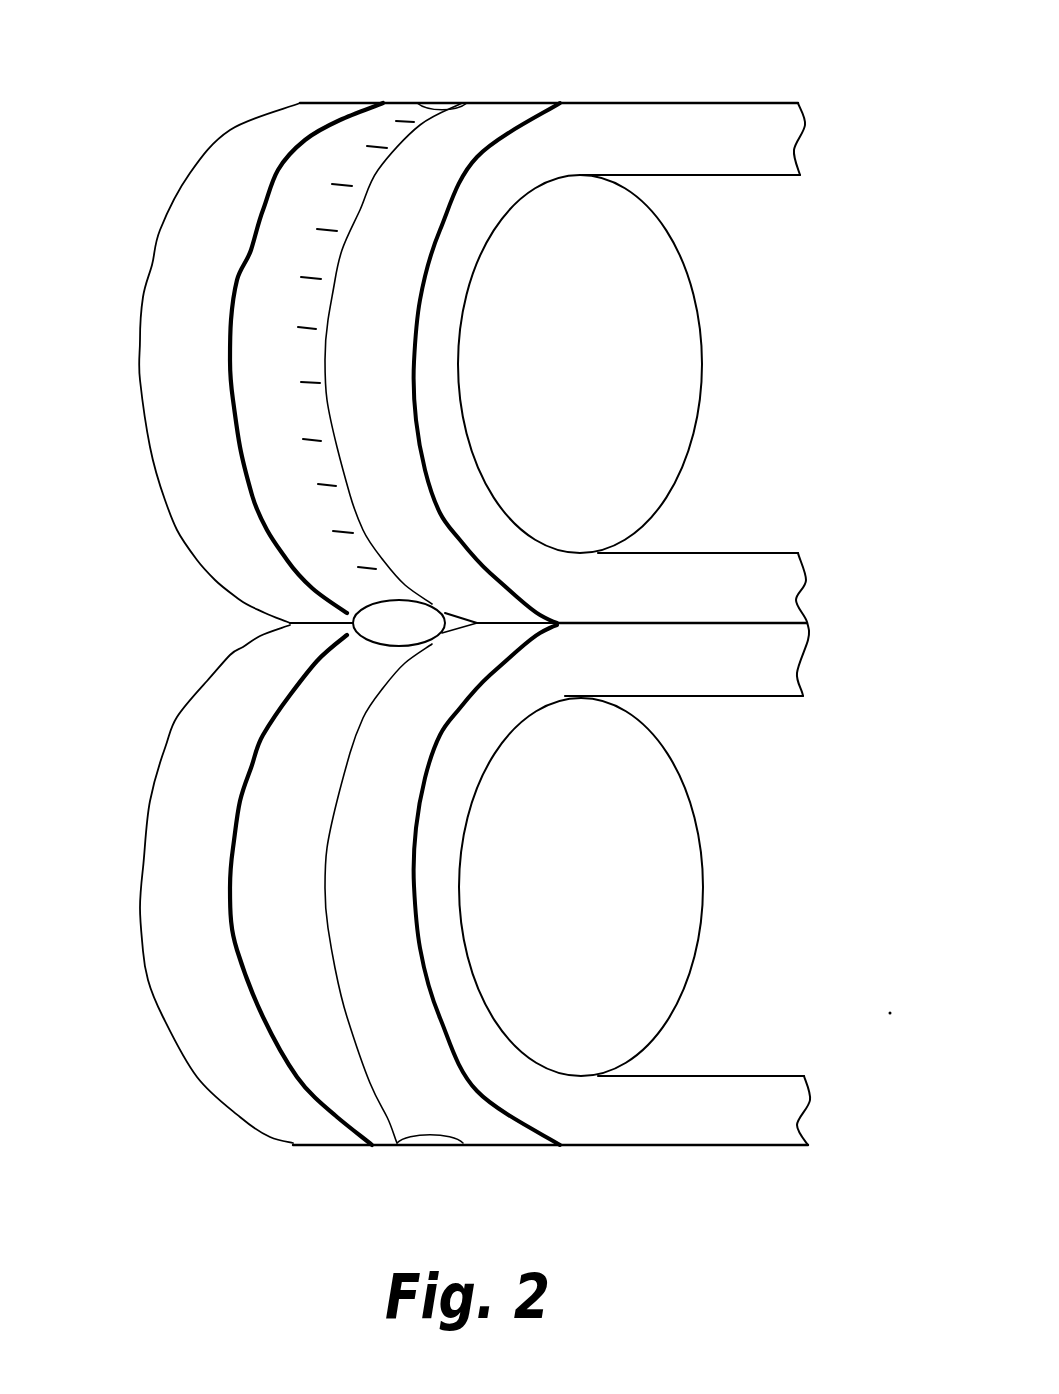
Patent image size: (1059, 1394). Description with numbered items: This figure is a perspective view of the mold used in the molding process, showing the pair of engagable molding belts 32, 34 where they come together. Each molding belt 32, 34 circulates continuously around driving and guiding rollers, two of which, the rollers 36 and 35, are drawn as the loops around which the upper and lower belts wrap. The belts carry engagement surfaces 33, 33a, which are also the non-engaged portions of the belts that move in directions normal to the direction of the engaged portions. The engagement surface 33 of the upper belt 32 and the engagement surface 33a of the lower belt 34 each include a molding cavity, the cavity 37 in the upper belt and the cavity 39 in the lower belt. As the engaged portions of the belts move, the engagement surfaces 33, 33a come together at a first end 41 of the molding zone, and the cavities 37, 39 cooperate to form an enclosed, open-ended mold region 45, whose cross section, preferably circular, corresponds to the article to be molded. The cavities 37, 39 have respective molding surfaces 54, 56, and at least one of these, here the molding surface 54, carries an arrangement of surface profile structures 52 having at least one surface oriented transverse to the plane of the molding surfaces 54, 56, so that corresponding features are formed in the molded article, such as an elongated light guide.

The molding belt 32 is at (567, 128).
The engagement surface 33 is at (205, 195).
The engagement surface 33a is at (178, 985).
The molding belt 34 is at (731, 1128).
The driving and guiding roller 35 is at (678, 862).
The driving and guiding roller 36 is at (673, 320).
The molding cavity 37 is at (390, 108).
The molding cavity 39 is at (373, 1107).
The first end of molding zone 41 is at (290, 625).
The enclosed open-ended mold region 45 is at (383, 613).
The surface profile structures 52 is at (305, 380).
The molding surface 54 is at (260, 428).
The molding surface 56 is at (260, 888).